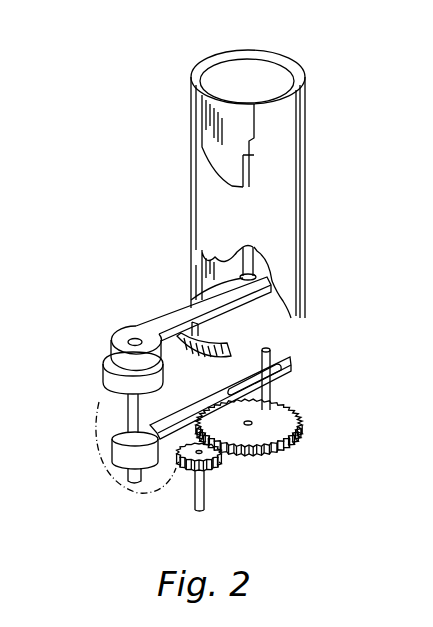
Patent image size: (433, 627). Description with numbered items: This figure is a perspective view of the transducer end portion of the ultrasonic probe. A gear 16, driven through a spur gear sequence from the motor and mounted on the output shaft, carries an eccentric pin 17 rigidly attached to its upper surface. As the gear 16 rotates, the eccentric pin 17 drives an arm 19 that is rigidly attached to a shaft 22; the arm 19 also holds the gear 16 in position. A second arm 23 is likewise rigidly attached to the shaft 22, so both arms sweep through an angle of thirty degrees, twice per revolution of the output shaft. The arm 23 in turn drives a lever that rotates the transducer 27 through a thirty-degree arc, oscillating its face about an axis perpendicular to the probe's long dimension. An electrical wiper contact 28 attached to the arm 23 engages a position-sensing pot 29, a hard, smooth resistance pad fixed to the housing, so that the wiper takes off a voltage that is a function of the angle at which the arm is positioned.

The transducer 27 is at (257, 73).
The position-sensing pot 29 is at (232, 347).
The arm 23 is at (190, 305).
The electrical wiper contact 28 is at (125, 316).
The shaft 22 is at (128, 405).
The arm 19 is at (140, 487).
The eccentric pin 17 is at (277, 393).
The gear 16 is at (300, 443).